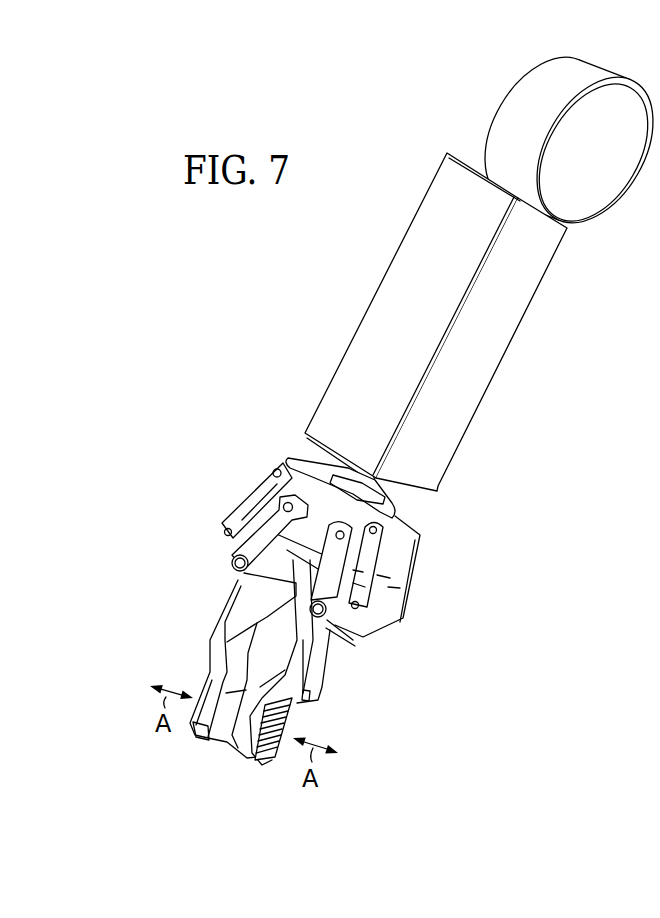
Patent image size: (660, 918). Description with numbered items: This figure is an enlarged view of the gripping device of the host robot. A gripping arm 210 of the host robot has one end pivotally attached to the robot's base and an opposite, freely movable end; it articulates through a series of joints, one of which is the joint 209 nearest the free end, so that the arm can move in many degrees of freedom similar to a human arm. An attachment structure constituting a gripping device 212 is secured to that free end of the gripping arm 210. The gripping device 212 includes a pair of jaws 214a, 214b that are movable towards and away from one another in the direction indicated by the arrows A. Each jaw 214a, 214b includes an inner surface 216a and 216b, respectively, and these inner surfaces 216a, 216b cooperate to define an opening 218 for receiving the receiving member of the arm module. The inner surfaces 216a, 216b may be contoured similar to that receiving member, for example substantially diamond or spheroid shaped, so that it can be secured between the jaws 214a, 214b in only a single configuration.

The joint 209 is at (300, 464).
The gripping arm 210 is at (484, 453).
The gripping device 212 is at (337, 708).
The jaw 214a is at (197, 733).
The jaw 214b is at (248, 762).
The inner surface 216a is at (247, 640).
The inner surface 216b is at (283, 673).
The opening 218 is at (246, 673).